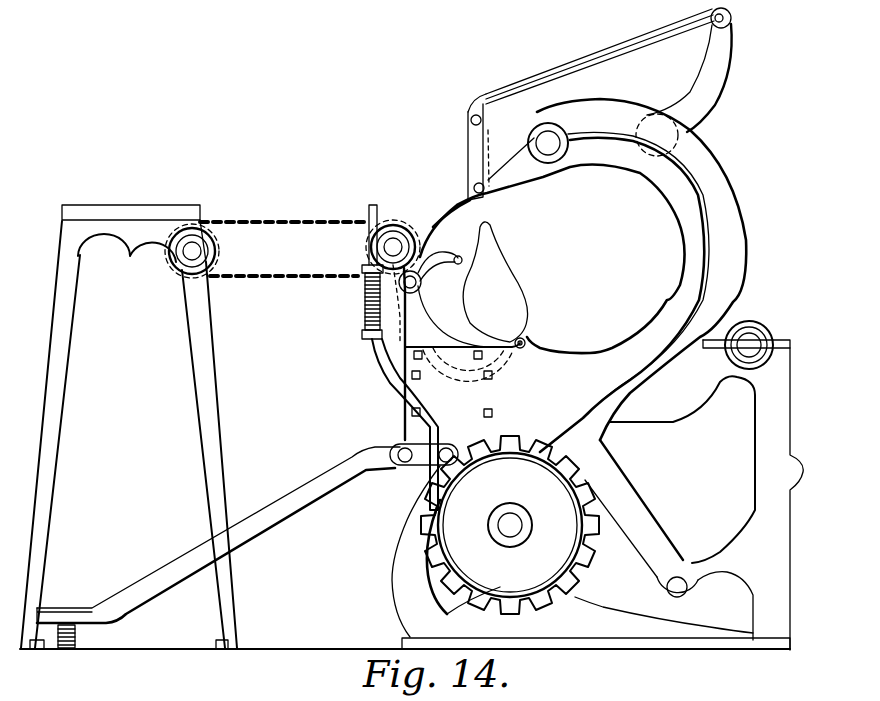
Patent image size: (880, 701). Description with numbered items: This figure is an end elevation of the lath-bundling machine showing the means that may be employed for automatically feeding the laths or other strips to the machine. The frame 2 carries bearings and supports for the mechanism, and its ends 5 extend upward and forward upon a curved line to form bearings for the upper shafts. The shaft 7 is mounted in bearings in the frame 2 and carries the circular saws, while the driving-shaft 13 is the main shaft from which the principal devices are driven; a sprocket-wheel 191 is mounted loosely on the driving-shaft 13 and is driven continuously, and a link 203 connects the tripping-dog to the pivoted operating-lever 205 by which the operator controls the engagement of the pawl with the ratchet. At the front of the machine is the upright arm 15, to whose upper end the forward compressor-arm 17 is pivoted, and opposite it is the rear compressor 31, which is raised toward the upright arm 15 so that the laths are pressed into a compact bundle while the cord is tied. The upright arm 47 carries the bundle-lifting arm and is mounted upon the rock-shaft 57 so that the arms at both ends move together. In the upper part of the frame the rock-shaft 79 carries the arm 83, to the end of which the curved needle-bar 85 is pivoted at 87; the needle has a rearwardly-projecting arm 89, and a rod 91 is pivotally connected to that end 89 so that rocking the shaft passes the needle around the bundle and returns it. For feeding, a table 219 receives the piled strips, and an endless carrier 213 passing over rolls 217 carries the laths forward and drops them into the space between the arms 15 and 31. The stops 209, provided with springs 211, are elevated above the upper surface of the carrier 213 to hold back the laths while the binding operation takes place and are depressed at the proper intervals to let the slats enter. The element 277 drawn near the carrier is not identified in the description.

The frame 2 is at (706, 495).
The ends of the frame 5 is at (583, 275).
The shaft 7 is at (755, 341).
The driving-shaft 13 is at (507, 528).
The upright arm 15 is at (417, 295).
The forward compressor-arm 17 is at (437, 257).
The rear compressor 31 is at (510, 278).
The upright arm 47 is at (645, 503).
The rock-shaft 57 is at (688, 590).
The rock-shaft 79 is at (550, 150).
The arm 83 is at (513, 183).
The needle-bar 85 is at (450, 203).
The pivot 87 is at (705, 102).
The rearwardly-projecting arm 89 is at (486, 131).
The rod 91 is at (612, 60).
The sprocket-wheel 191 is at (533, 567).
The link 203 is at (440, 473).
The operating-lever 205 is at (380, 462).
The stops 209 is at (378, 366).
The springs 211 is at (361, 314).
The endless carrier 213 is at (256, 277).
The rolls 217 is at (220, 252).
The table 219 is at (122, 212).
The pulley 277 is at (390, 217).